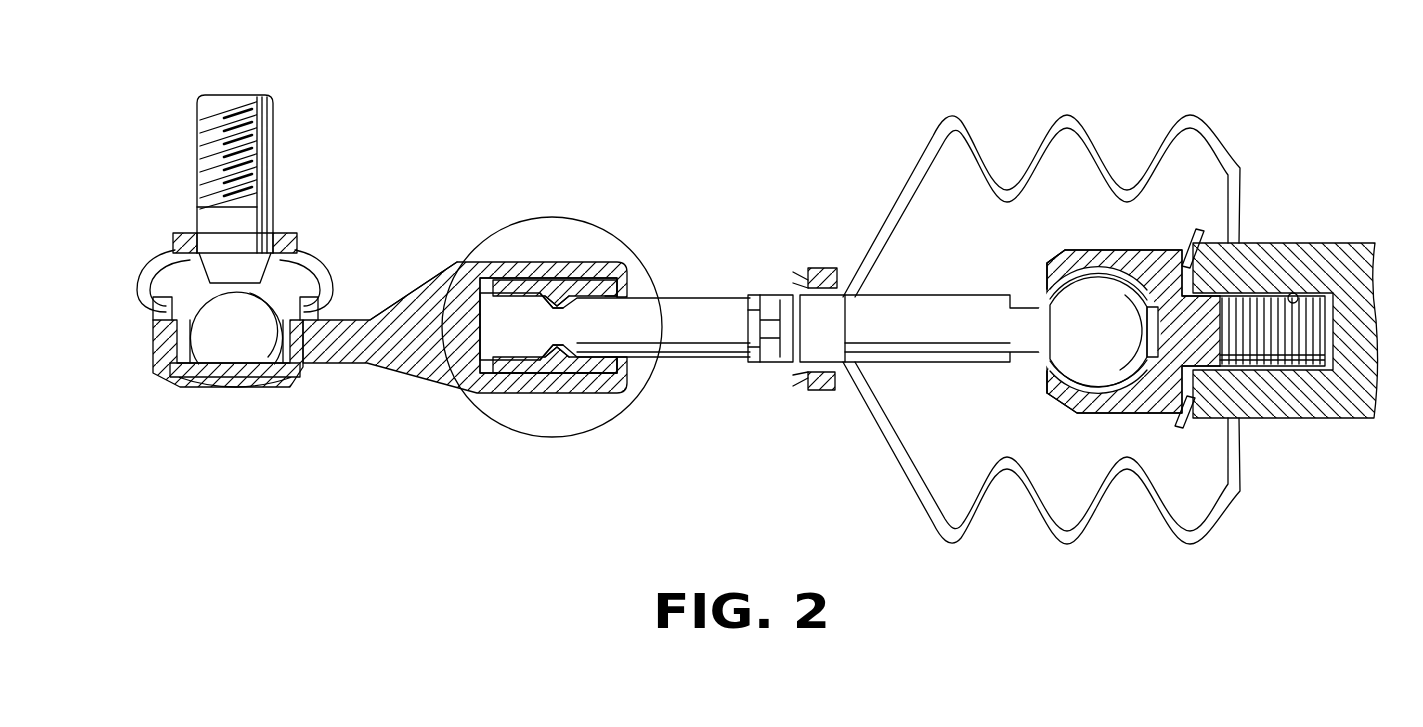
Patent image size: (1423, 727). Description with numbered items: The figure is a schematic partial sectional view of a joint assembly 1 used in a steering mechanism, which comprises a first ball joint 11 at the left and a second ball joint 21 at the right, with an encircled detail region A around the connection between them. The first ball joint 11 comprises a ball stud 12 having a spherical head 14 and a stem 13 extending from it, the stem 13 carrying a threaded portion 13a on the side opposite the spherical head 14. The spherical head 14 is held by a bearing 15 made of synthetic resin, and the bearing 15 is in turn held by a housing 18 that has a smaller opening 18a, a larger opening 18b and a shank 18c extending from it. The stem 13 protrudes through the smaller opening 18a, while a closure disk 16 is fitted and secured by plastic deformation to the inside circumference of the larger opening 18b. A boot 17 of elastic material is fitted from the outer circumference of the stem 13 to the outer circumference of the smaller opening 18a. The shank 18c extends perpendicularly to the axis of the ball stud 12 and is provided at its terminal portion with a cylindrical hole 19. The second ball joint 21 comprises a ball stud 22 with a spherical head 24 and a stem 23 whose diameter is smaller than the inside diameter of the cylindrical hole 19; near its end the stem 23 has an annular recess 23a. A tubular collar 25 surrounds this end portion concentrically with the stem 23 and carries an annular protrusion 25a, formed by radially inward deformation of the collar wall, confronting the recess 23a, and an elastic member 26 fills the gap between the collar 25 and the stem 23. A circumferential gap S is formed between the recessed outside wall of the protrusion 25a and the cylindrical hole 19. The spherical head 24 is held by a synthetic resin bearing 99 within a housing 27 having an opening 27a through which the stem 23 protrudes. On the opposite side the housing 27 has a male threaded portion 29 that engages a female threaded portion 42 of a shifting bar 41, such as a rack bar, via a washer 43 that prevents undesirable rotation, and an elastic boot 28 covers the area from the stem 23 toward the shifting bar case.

The joint assembly 1 is at (638, 147).
The first ball joint 11 is at (400, 155).
The ball stud 12 is at (268, 97).
The stem 13 is at (274, 220).
The threaded portion 13a is at (274, 153).
The spherical head 14 is at (233, 348).
The bearing 15 is at (320, 380).
The closure disk 16 is at (257, 388).
The boot 17 is at (298, 250).
The housing 18 is at (403, 378).
The smaller opening 18a is at (158, 262).
The larger opening 18b is at (190, 385).
The shank 18c is at (402, 296).
The cylindrical hole 19 is at (515, 262).
The circumferential gap S is at (552, 280).
The second ball joint 21 is at (856, 146).
The ball stud 22 is at (913, 300).
The stem 23 is at (697, 358).
The annular recess 23a is at (560, 365).
The spherical head 24 is at (1075, 345).
The tubular collar 25 is at (595, 372).
The annular protrusion 25a is at (610, 300).
The elastic member 26 is at (598, 283).
The housing 27 is at (1068, 255).
The opening 27a is at (1045, 287).
The boot 28 is at (880, 460).
The male threaded portion 29 is at (1282, 372).
The shifting bar 41 is at (1360, 252).
The female threaded portion 42 is at (1297, 296).
The washer 43 is at (1207, 233).
The bearing 99 is at (1108, 268).
The detail circle A is at (649, 247).